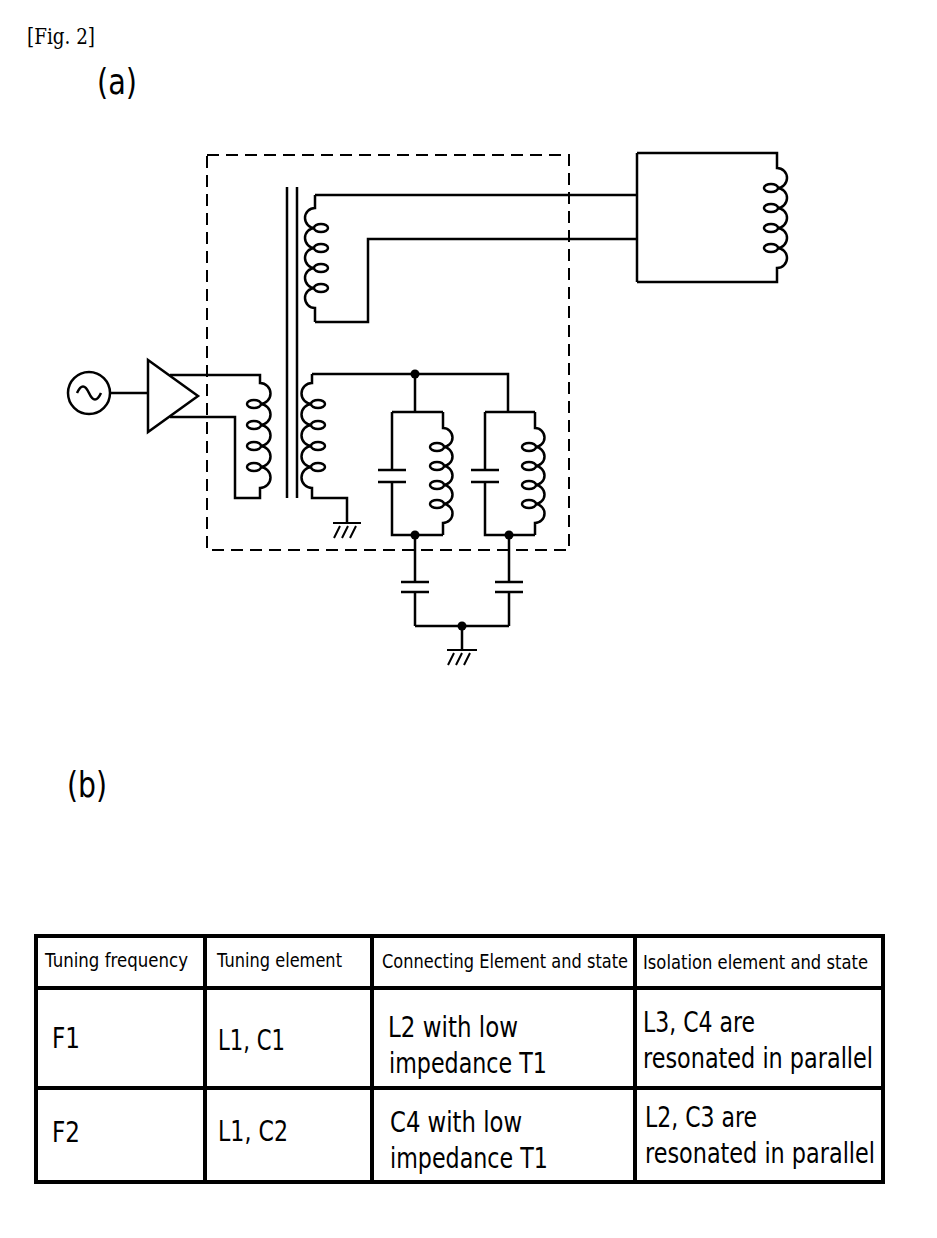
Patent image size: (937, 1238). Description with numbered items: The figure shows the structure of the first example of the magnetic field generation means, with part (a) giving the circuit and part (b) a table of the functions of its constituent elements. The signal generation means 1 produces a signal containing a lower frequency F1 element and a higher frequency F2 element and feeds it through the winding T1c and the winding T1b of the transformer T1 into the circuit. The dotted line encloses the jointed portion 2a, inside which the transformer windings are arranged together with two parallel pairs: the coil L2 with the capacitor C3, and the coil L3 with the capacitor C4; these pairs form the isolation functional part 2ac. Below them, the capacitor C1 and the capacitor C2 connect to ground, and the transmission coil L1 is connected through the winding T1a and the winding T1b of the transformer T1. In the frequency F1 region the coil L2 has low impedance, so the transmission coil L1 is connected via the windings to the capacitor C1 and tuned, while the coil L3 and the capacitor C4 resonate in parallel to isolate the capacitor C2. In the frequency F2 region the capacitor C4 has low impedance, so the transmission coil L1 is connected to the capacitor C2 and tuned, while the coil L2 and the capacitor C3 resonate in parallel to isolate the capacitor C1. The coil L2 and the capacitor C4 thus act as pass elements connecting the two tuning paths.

The signal generation means 1 is at (130, 385).
The jointed portion 2a is at (442, 156).
The isolation functional part 2ac is at (521, 511).
The transformer T1 is at (292, 185).
The winding T1a is at (323, 235).
The winding T1b is at (312, 490).
The winding T1c is at (250, 473).
The transmission coil L1 is at (717, 283).
The coil L2 is at (450, 527).
The coil L3 is at (541, 527).
The capacitor C1 is at (402, 588).
The capacitor C2 is at (521, 590).
The capacitor C3 is at (410, 473).
The capacitor C4 is at (503, 473).